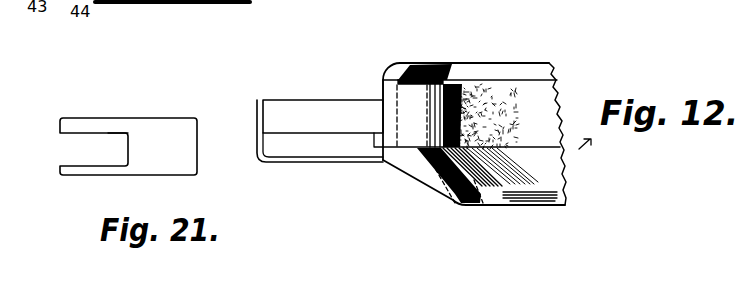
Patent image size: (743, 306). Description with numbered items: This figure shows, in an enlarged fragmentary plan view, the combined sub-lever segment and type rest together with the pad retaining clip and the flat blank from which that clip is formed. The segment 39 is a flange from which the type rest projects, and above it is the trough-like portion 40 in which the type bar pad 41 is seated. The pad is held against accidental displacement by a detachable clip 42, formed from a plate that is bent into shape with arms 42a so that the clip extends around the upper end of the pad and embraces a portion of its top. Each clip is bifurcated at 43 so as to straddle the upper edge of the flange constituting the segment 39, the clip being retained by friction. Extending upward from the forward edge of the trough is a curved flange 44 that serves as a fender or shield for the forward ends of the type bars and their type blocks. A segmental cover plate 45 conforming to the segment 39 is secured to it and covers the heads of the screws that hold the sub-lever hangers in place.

In FIG. 12, the segment 39 is at (323, 116).
In FIG. 12, the trough-like portion 40 is at (500, 69).
In FIG. 12, the type bar pad 41 is at (471, 116).
In FIG. 21, the clip 42 is at (128, 146).
In FIG. 12, the clip 42 is at (400, 113).
In FIG. 12, the arms 42a is at (438, 86).
In FIG. 21, the bifurcation 43 is at (113, 133).
In FIG. 12, the bifurcation 43 is at (380, 97).
In FIG. 12, the flange 44 is at (456, 204).
In FIG. 12, the cover plate 45 is at (300, 162).